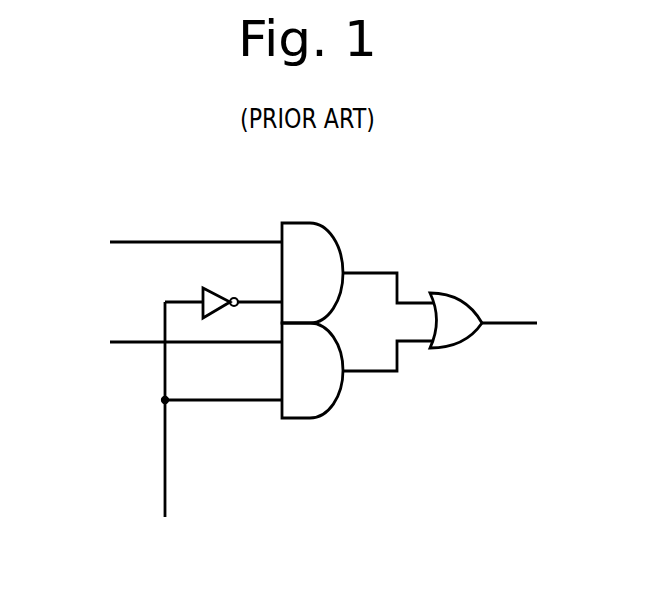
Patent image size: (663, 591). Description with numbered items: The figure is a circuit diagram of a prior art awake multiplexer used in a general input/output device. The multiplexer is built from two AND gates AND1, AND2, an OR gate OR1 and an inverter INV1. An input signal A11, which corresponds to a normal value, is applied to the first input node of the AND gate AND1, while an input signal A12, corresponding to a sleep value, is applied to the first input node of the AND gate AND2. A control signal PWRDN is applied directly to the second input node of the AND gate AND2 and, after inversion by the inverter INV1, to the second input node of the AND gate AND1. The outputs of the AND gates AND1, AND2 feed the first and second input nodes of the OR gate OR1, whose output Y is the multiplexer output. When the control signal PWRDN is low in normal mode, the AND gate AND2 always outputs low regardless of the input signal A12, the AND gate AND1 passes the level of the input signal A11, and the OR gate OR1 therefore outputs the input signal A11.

The input signal A11 is at (172, 244).
The input signal A12 is at (172, 342).
The control signal PWRDN is at (207, 425).
The inverter INV1 is at (223, 289).
The AND gate AND1 is at (292, 222).
The AND gate AND2 is at (313, 420).
The OR gate OR1 is at (460, 349).
The output signal line Y is at (521, 325).